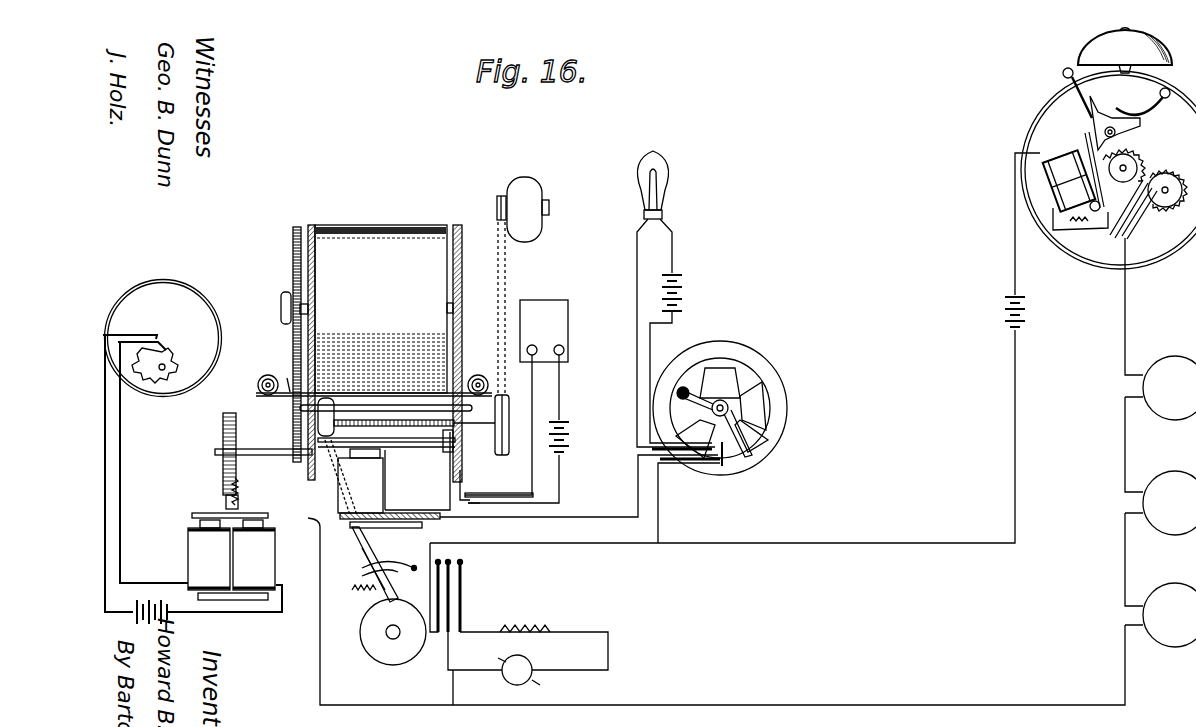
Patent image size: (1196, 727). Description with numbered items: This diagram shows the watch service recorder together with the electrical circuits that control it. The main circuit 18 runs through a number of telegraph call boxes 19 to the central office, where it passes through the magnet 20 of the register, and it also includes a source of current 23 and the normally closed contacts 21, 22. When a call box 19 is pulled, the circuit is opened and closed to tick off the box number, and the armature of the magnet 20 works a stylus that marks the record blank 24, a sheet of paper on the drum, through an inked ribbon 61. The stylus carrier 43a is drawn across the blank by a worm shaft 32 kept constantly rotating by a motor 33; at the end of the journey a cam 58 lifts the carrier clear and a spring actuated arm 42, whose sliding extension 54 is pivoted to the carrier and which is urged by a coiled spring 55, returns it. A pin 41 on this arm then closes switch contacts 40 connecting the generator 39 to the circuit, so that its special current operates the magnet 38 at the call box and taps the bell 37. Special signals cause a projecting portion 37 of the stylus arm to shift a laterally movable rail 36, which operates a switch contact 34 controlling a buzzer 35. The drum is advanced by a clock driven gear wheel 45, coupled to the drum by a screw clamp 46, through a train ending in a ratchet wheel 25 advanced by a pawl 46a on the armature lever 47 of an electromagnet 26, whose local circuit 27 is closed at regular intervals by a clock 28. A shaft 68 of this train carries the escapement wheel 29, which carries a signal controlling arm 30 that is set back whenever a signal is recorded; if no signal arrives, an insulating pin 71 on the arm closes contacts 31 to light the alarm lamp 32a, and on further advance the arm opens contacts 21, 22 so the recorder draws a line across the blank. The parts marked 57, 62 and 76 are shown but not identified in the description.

The main circuit 18 is at (728, 429).
The telegraph call boxes 19 is at (1044, 112).
The magnet of the register 20 is at (340, 514).
The normally closed contact 21 is at (682, 462).
The normally closed contact 22 is at (697, 466).
The source of current 23 is at (1005, 314).
The record blank 24 is at (381, 344).
The ratchet wheel 25 is at (223, 433).
The electromagnet 26 is at (240, 556).
The local circuit 27 is at (182, 479).
The clock 28 is at (163, 338).
The escapement wheel 29 is at (727, 343).
The contact operating arm 30 is at (700, 405).
The normally open contacts 31 is at (724, 462).
The worm shaft 32 is at (400, 420).
The alarm signal lamp 32a is at (670, 173).
The motor 33 is at (538, 222).
The switch contact 34 is at (480, 494).
The buzzer or alarm device 35 is at (517, 401).
The laterally movable rail 36 is at (380, 446).
The bell 37 is at (746, 271).
The magnet 38 is at (1063, 152).
The generator 39 is at (524, 655).
The switch contacts 40 is at (462, 577).
The pin 41 is at (390, 556).
The rocking arm 42 is at (362, 576).
The stylus carrier 43a is at (318, 425).
The gear wheel 45 is at (293, 282).
The screw clamp 46 is at (281, 305).
The pawl 46a is at (238, 503).
The armature lever 47 is at (192, 515).
The sliding extension 54 is at (360, 545).
The coiled spring 55 is at (354, 592).
The pulley bracket 57 is at (455, 440).
The cam 58 is at (450, 433).
The inked ribbon 61 is at (281, 371).
The guide rollers 62 is at (478, 360).
The shaft 68 is at (372, 405).
The insulating pin 71 is at (680, 386).
The hub 76 is at (760, 430).